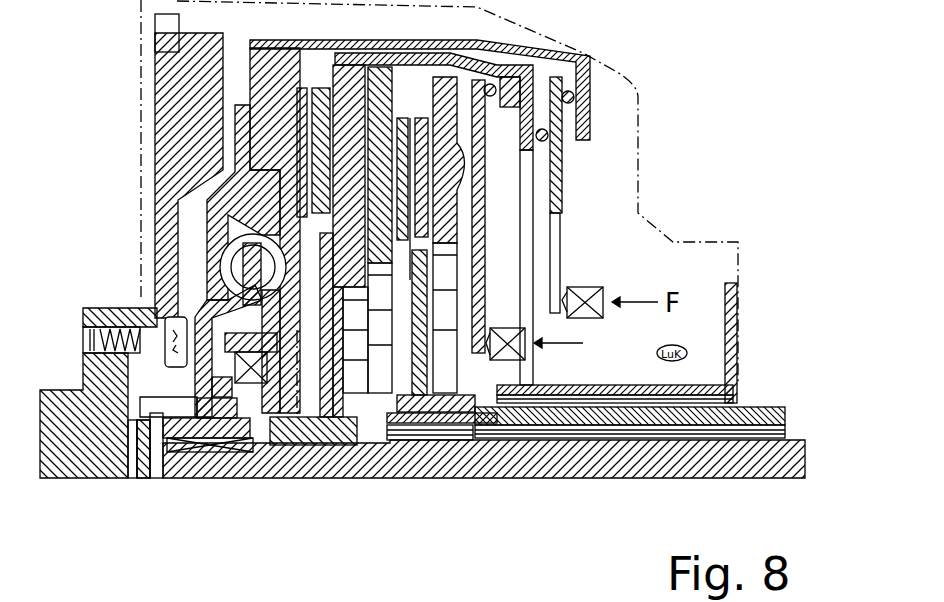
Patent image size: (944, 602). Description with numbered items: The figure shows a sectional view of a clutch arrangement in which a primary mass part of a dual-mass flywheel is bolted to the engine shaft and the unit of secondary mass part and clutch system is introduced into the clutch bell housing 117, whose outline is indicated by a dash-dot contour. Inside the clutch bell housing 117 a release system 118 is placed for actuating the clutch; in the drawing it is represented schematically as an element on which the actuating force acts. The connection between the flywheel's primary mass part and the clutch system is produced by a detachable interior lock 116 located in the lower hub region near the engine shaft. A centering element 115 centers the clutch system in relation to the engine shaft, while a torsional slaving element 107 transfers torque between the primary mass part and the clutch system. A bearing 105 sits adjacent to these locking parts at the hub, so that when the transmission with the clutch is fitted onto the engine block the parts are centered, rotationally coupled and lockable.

The bearing 105 is at (240, 447).
The torsional slaving element 107 is at (215, 402).
The centering element 115 is at (203, 423).
The interior lock 116 is at (142, 467).
The clutch bell housing 117 is at (640, 155).
The release system 118 is at (506, 362).